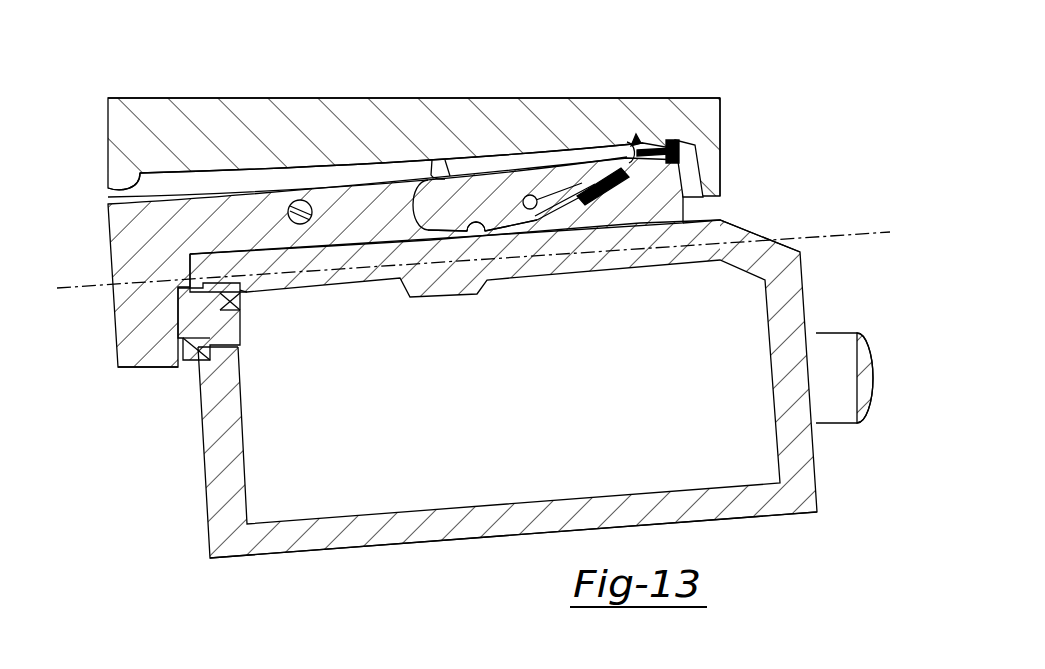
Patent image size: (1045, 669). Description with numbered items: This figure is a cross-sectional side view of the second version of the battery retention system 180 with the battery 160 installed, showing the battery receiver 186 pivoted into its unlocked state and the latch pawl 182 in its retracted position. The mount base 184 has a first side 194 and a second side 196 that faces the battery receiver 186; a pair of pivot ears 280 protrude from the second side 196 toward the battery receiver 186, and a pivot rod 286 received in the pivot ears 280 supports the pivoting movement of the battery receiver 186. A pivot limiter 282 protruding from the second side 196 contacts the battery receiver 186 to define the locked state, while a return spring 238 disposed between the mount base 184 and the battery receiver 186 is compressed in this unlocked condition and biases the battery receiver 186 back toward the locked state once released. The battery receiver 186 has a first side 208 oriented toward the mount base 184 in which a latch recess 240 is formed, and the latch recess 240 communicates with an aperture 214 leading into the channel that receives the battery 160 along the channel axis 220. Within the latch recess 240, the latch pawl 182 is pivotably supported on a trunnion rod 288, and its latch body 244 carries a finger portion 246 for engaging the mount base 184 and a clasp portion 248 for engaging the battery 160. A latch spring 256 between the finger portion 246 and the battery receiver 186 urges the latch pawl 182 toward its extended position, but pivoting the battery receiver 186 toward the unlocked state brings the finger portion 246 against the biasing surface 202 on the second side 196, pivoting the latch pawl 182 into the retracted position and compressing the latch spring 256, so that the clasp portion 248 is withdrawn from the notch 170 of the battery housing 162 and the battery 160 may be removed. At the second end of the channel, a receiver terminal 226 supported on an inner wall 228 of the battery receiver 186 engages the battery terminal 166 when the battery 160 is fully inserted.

The battery 160 is at (852, 458).
The battery housing 162 is at (762, 520).
The battery terminal 166 is at (233, 322).
The notch 170 is at (447, 268).
The battery retention system 180 is at (755, 60).
The latch pawl 182 is at (512, 157).
The mount base 184 is at (604, 117).
The battery receiver 186 is at (157, 240).
The first side 194 is at (342, 96).
The second side 196 is at (712, 202).
The biasing surface 202 is at (510, 160).
The first side 208 is at (228, 190).
The aperture 214 is at (470, 235).
The channel axis 220 is at (70, 292).
The receiver terminal 226 is at (180, 352).
The inner wall 228 is at (140, 345).
The return spring 238 is at (695, 145).
The latch recess 240 is at (432, 173).
The latch body 244 is at (540, 180).
The finger portion 246 is at (636, 140).
The clasp portion 248 is at (448, 176).
The latch spring 256 is at (585, 202).
The pivot ears 280 is at (333, 181).
The pivot limiter 282 is at (125, 185).
The pivot rod 286 is at (312, 218).
The trunnion rod 288 is at (540, 210).